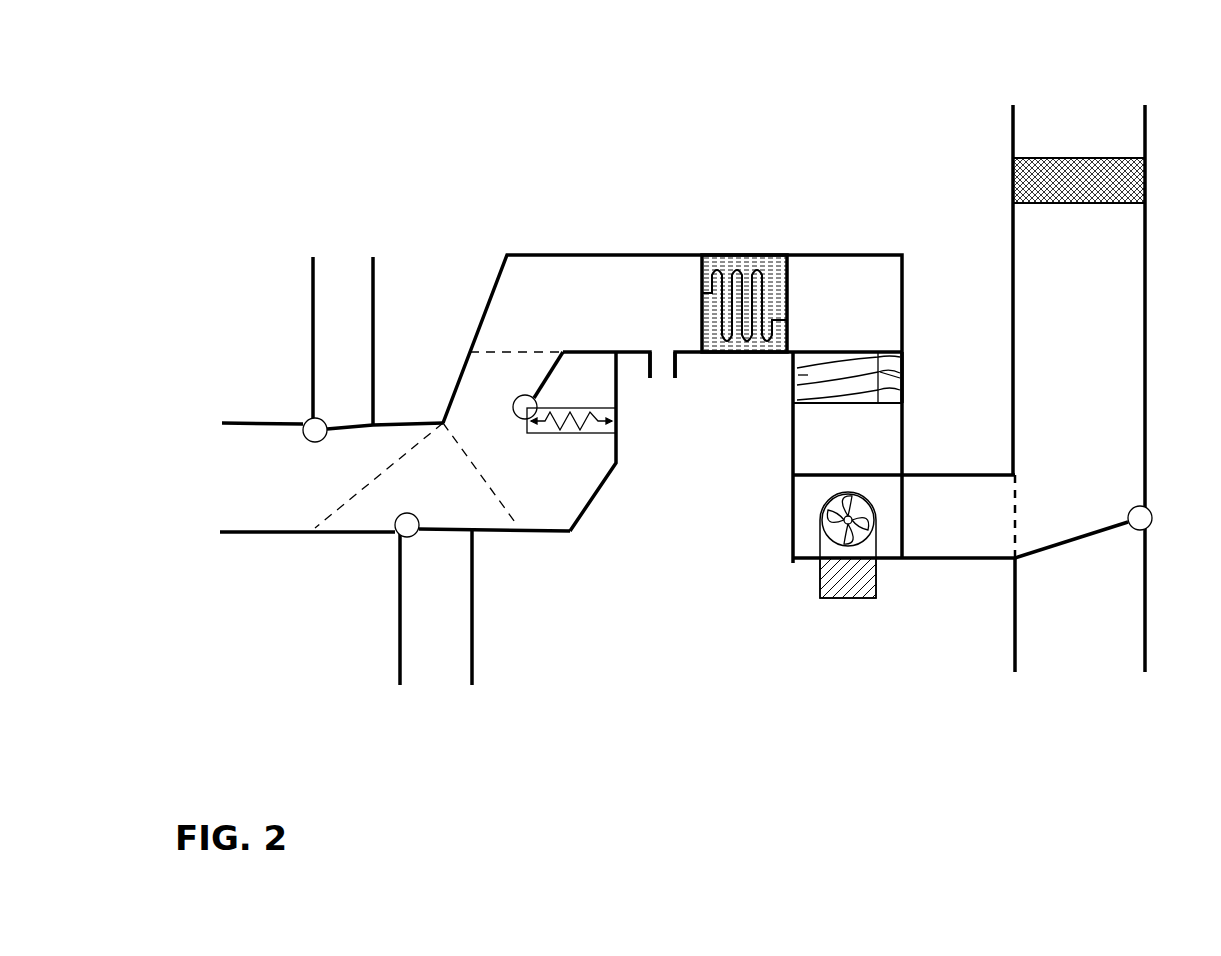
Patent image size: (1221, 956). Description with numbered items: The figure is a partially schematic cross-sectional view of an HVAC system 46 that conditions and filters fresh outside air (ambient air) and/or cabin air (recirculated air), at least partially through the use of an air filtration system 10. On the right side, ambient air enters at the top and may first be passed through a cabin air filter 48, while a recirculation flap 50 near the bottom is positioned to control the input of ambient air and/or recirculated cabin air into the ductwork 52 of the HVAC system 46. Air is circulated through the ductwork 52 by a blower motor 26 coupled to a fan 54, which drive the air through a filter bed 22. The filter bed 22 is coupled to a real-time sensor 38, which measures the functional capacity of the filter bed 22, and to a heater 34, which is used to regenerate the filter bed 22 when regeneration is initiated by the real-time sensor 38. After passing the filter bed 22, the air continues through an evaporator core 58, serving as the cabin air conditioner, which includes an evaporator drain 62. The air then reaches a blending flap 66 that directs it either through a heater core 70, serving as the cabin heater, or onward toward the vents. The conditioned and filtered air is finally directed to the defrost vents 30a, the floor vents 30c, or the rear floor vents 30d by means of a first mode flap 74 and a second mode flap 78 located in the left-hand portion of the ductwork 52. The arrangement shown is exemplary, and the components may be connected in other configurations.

The air filtration system 10 is at (928, 360).
The filter bed 22 is at (797, 376).
The blower motor 26 is at (840, 576).
The defrost vents 30a is at (342, 281).
The floor vents 30c is at (444, 660).
The rear floor vents 30d is at (243, 471).
The heater 34 is at (904, 379).
The real-time sensor 38 is at (905, 363).
The HVAC system 46 is at (403, 196).
The cabin air filter 48 is at (1123, 185).
The recirculation flap 50 is at (1150, 516).
The ductwork 52 is at (1085, 372).
The fan 54 is at (825, 520).
The evaporator core 58 is at (730, 265).
The evaporator drain 62 is at (666, 386).
The blending flap 66 is at (515, 405).
The heater core 70 is at (597, 430).
The first mode flap 74 is at (310, 430).
The second mode flap 78 is at (400, 523).